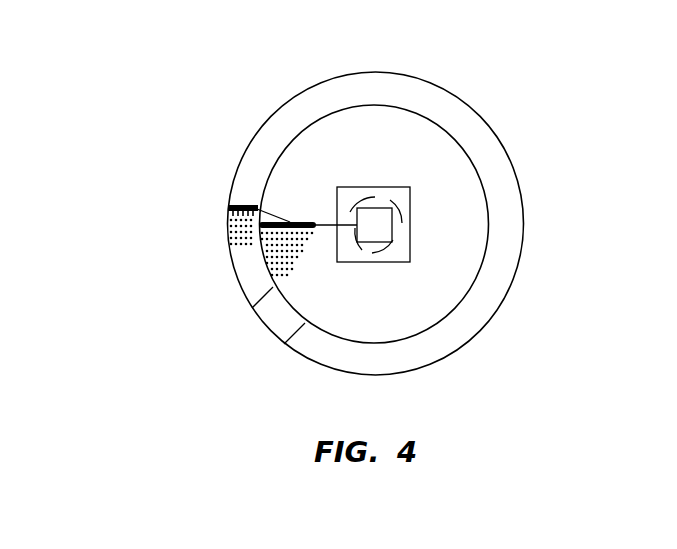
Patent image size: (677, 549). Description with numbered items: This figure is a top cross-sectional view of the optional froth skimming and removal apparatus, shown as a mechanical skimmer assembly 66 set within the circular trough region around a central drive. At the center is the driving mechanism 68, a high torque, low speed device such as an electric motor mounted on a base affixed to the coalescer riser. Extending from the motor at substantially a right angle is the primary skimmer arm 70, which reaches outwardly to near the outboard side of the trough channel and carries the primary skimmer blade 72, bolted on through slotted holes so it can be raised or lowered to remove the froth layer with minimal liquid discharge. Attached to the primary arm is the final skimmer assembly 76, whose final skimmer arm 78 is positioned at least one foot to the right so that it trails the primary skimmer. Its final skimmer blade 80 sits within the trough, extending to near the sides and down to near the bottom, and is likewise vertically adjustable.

The mechanical skimmer assembly 66 is at (305, 193).
The driving mechanism 68 is at (379, 207).
The primary skimmer arm 70 is at (329, 222).
The primary skimmer blade 72 is at (313, 221).
The final skimmer assembly 76 is at (227, 214).
The final skimmer arm 78 is at (264, 213).
The final skimmer blade 80 is at (240, 204).